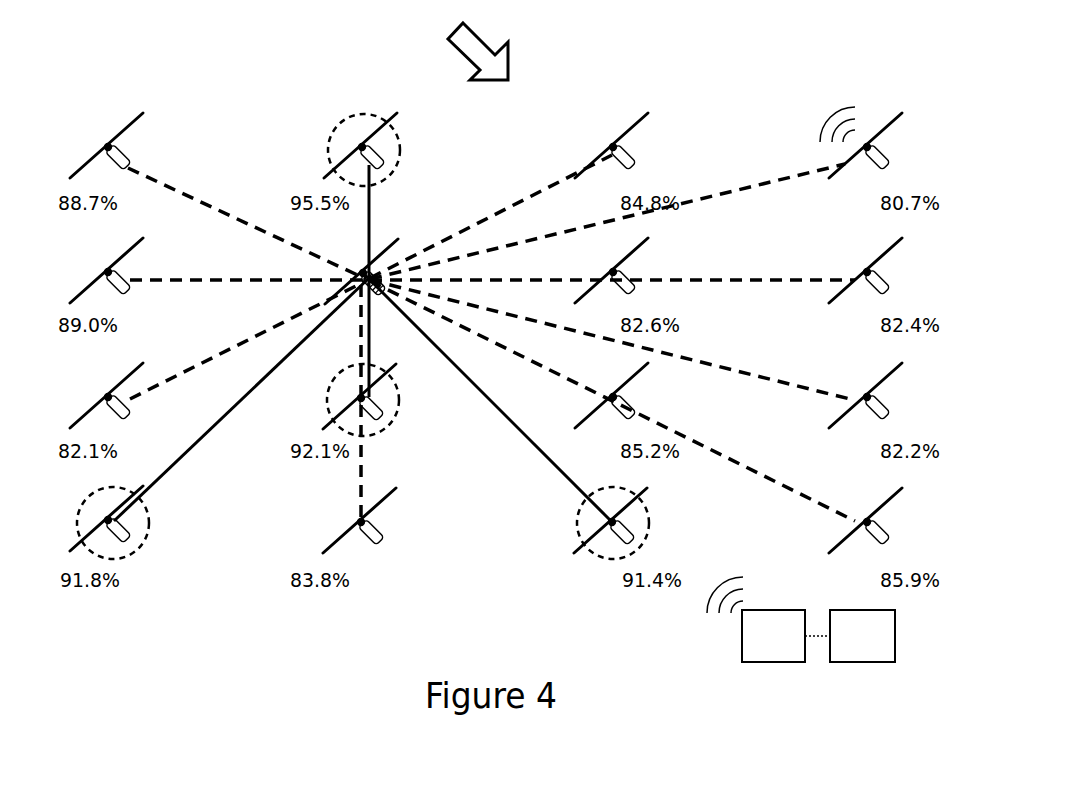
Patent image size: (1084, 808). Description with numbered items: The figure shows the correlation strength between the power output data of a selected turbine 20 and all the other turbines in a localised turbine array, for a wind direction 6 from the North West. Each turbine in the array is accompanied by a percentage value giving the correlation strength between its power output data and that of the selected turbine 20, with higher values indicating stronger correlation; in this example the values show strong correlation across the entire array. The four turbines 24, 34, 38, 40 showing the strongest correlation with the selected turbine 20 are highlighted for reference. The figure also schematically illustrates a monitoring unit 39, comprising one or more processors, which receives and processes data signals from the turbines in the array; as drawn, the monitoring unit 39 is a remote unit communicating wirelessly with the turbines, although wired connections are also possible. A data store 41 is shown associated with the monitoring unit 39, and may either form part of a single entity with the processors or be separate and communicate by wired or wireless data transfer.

The wind direction 6 is at (470, 42).
The selected turbine 20 is at (362, 270).
The turbine 24 is at (340, 118).
The turbine 34 is at (399, 393).
The turbine 38 is at (150, 532).
The turbine 40 is at (578, 520).
The monitoring unit 39 is at (790, 650).
The data store 41 is at (879, 650).